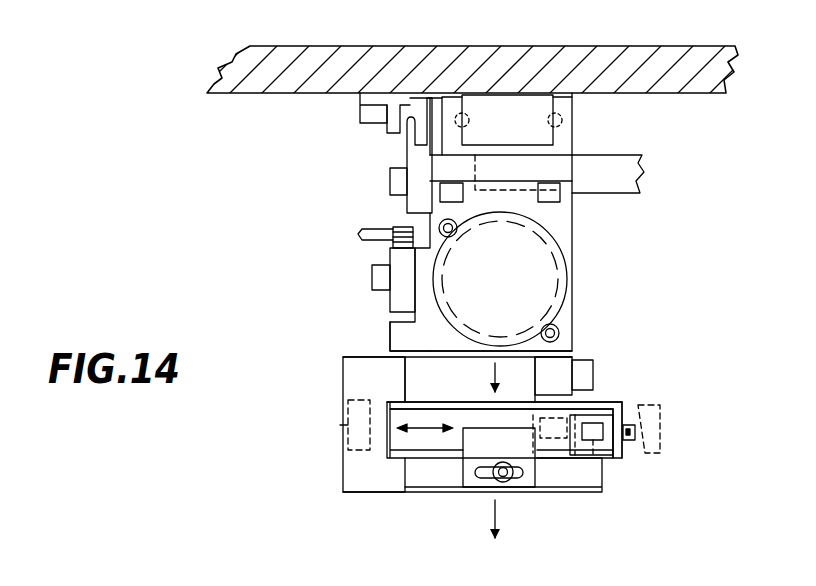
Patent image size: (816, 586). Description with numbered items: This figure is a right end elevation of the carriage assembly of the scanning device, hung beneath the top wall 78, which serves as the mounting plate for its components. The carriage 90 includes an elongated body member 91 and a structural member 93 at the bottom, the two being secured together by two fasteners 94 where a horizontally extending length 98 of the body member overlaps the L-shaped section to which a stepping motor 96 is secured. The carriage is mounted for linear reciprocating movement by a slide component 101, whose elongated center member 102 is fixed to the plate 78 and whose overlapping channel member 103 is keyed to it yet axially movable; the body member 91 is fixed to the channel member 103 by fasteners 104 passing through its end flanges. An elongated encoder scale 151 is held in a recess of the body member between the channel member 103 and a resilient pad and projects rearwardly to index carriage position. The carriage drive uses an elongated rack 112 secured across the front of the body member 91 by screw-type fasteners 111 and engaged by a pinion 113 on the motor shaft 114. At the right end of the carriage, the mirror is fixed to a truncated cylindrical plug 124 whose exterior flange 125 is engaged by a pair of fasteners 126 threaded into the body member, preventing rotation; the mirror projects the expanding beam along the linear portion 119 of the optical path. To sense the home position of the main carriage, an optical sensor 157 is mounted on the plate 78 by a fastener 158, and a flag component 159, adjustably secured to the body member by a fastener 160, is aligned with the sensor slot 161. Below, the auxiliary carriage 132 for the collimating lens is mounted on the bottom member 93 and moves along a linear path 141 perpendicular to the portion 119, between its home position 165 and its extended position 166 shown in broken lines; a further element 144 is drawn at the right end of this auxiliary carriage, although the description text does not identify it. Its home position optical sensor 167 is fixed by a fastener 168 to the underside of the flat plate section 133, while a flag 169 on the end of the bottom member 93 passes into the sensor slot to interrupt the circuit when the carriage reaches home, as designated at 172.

The top wall 78 is at (490, 46).
The optical sensor 157 is at (360, 106).
The fastener 158 is at (362, 126).
The flag component 159 is at (406, 152).
The fastener 160 is at (390, 181).
The fasteners 104 is at (440, 193).
The slide component 101 is at (573, 110).
The elongated center member 102 is at (556, 133).
The slot 161 is at (470, 107).
The channel member 103 is at (574, 154).
The encoder scale 151 is at (644, 155).
The body member 91 is at (573, 219).
The exterior flange 125 is at (573, 246).
The fasteners 126 is at (458, 234).
The pinion 113 is at (393, 229).
The shaft 114 is at (360, 237).
The screw-type fasteners 111 is at (372, 273).
The rack 112 is at (372, 290).
The carriage 90 is at (388, 343).
The truncated cylindrical plug 124 is at (460, 332).
The horizontally extending length 98 is at (574, 360).
The fasteners 94 is at (594, 376).
The stepping motor 96 is at (343, 380).
The home position 165 is at (340, 425).
The structural member 93 is at (556, 493).
The flat plate section 133 is at (423, 400).
The linear portion of optical path 119 is at (493, 369).
The linear path 141 is at (438, 424).
The home position designation 172 is at (533, 426).
The auxiliary carriage 132 is at (626, 402).
The fastener 168 is at (592, 468).
The release knob 144 is at (637, 433).
The extended position 166 is at (665, 437).
The optical sensor 167 is at (618, 462).
The flag 169 is at (463, 473).